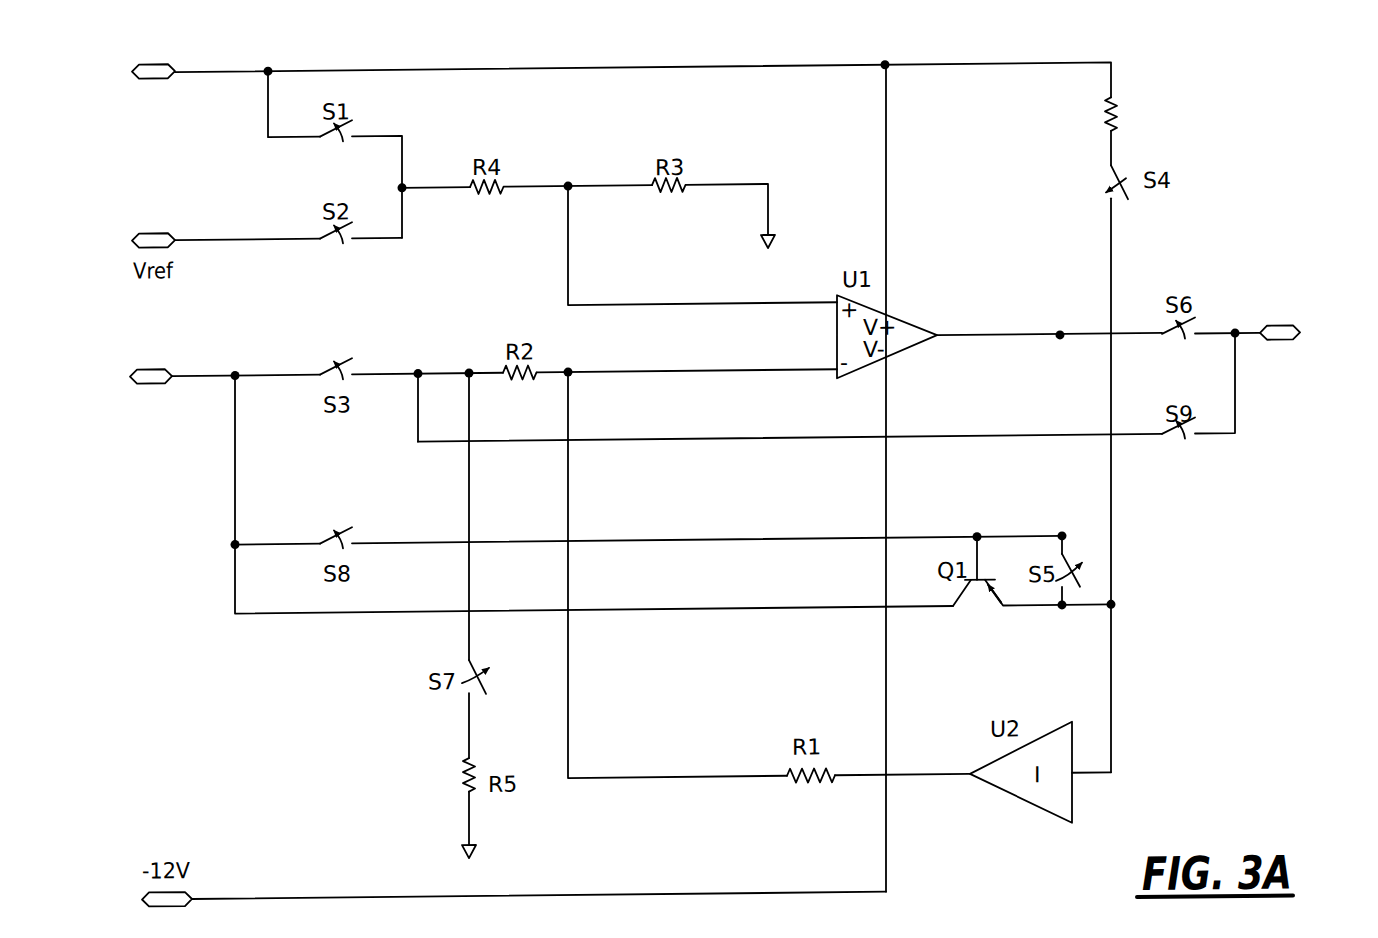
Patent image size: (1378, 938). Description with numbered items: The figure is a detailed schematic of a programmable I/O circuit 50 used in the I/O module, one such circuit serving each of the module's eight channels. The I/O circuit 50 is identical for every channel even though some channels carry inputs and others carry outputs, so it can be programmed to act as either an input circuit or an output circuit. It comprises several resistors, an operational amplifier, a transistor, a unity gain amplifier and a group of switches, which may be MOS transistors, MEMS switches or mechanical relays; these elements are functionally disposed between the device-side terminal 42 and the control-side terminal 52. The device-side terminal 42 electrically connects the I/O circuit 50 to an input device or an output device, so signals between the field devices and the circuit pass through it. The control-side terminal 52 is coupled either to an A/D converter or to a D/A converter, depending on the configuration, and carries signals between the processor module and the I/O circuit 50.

The I/O circuit 50 is at (152, 53).
The device-side terminal 42 is at (150, 370).
The control-side terminal 52 is at (1283, 337).